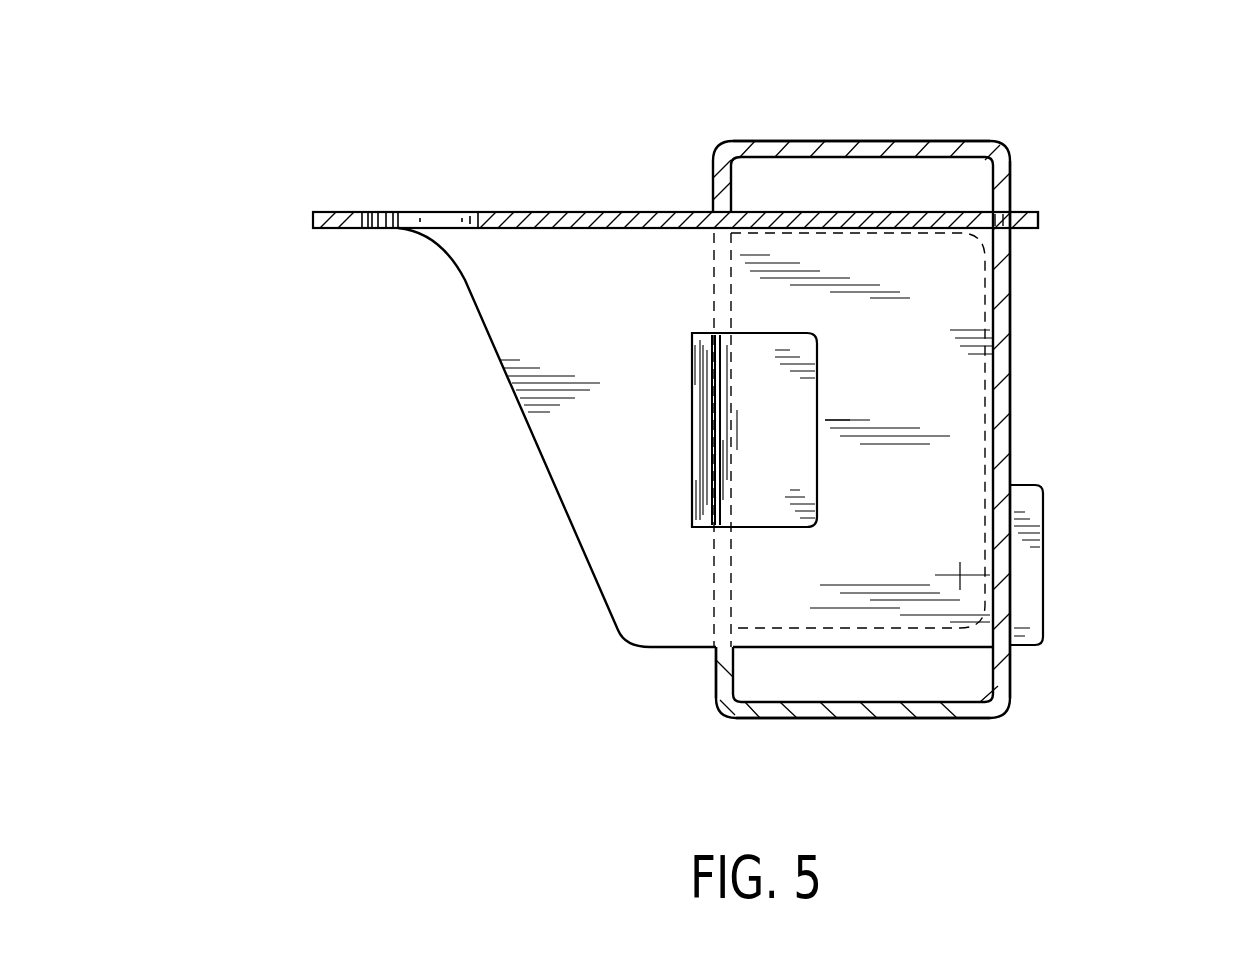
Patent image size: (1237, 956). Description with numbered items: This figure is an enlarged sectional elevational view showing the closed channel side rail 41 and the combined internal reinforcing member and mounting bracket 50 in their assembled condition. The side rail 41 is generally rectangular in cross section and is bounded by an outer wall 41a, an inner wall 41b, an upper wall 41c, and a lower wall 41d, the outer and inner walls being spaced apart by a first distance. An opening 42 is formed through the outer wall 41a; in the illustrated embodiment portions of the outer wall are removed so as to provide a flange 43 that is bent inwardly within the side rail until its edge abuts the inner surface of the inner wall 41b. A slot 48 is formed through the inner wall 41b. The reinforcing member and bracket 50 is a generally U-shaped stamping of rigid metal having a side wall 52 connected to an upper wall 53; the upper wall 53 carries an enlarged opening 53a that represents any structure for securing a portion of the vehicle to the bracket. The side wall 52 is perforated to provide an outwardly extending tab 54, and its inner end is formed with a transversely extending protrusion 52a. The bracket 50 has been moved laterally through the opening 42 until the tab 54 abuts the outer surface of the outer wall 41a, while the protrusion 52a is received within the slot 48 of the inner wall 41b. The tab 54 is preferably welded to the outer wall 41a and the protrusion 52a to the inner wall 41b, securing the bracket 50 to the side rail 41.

The side rail 41 is at (990, 143).
The outer wall 41a is at (718, 660).
The inner wall 41b is at (1012, 372).
The upper wall 41c is at (830, 140).
The lower wall 41d is at (870, 710).
The opening 42 is at (668, 282).
The flange 43 is at (772, 467).
The slot 48 is at (1012, 232).
The combined internal reinforcing member and mounting bracket 50 is at (405, 287).
The side wall 52 is at (520, 338).
The protrusion 52a is at (1035, 568).
The upper wall 53 is at (585, 212).
The protrusion 53a is at (372, 212).
The tab 54 is at (692, 378).